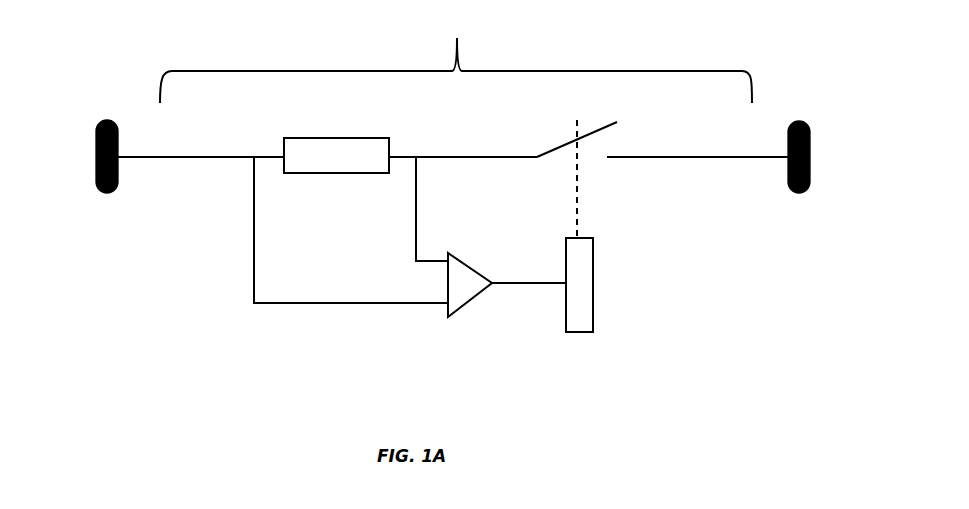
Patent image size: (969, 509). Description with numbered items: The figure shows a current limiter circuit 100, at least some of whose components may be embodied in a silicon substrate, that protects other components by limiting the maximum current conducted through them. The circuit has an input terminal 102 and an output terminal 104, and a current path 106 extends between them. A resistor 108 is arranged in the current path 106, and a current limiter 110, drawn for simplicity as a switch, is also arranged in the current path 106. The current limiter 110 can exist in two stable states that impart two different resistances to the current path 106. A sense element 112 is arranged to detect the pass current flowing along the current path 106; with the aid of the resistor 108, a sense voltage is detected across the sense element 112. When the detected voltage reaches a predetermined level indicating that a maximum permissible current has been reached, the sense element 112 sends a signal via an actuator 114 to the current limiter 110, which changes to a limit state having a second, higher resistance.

The current limiter circuit 100 is at (474, 403).
The input terminal 102 is at (108, 120).
The output terminal 104 is at (796, 121).
The current path 106 is at (456, 59).
The resistor 108 is at (318, 138).
The current limiter 110 is at (593, 157).
The sense element 112 is at (447, 312).
The actuator 114 is at (577, 332).